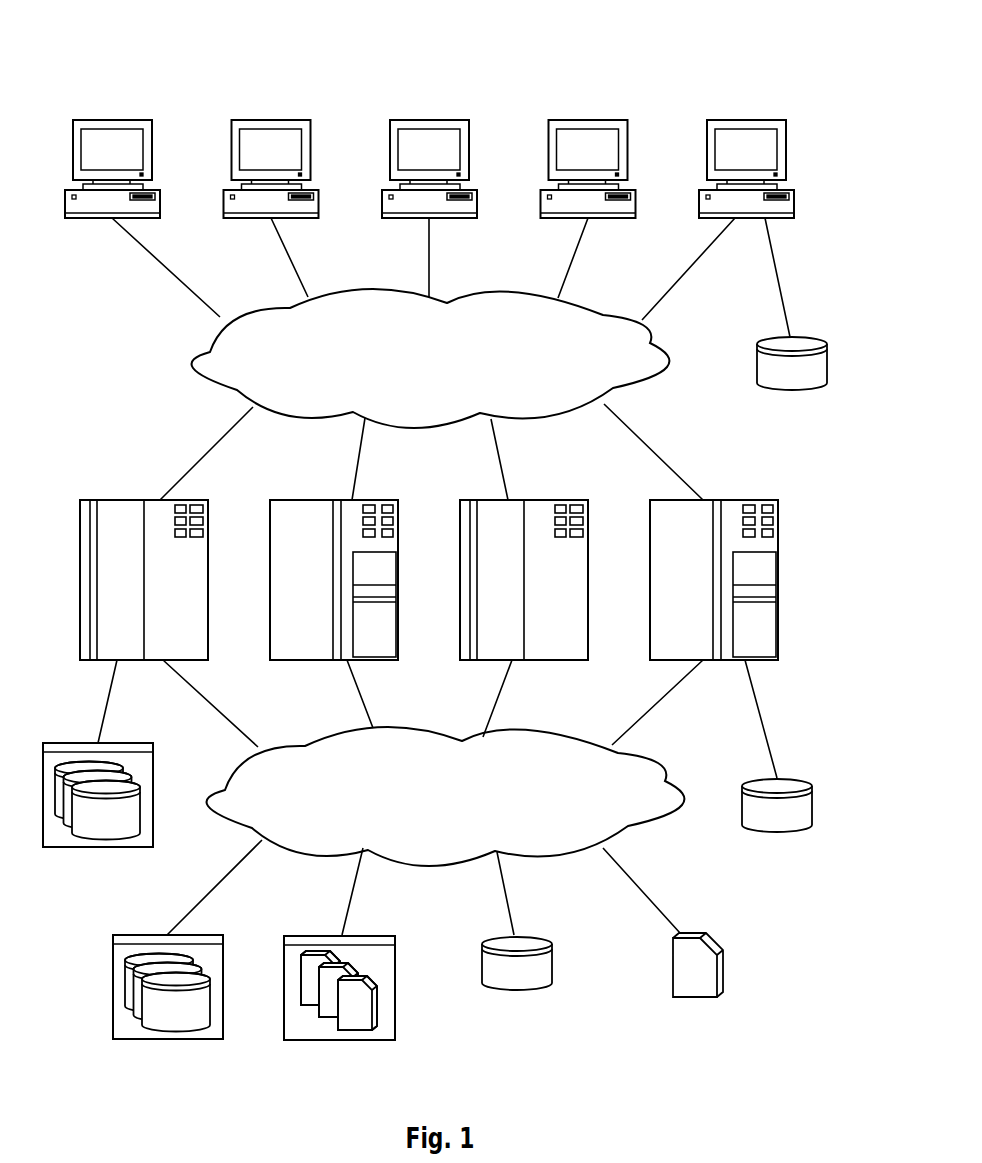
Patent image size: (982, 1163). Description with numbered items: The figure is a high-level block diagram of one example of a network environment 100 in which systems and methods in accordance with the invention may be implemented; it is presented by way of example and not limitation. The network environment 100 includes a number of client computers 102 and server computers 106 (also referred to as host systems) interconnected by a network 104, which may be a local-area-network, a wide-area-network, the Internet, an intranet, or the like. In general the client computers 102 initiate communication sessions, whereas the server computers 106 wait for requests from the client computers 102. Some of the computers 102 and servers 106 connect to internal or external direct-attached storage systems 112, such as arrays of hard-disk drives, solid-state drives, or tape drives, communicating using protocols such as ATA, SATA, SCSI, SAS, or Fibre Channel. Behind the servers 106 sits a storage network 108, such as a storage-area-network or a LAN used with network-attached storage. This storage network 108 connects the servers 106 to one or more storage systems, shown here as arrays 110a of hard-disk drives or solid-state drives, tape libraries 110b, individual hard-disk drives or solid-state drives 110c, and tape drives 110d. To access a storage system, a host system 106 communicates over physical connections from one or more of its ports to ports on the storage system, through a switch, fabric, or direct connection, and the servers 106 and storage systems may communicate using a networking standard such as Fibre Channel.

The network environment 100 is at (178, 57).
The client computers 102 is at (760, 156).
The network 104 is at (557, 373).
The server computers 106 is at (699, 588).
The storage network 108 is at (542, 806).
The arrays of hard-disk drives or solid-state drives 110a is at (168, 1040).
The tape libraries 110b is at (340, 1042).
The individual hard-disk drives or solid-state drives 110c is at (513, 992).
The tape drives 110d is at (693, 998).
The direct-attached storage systems 112 is at (108, 890).